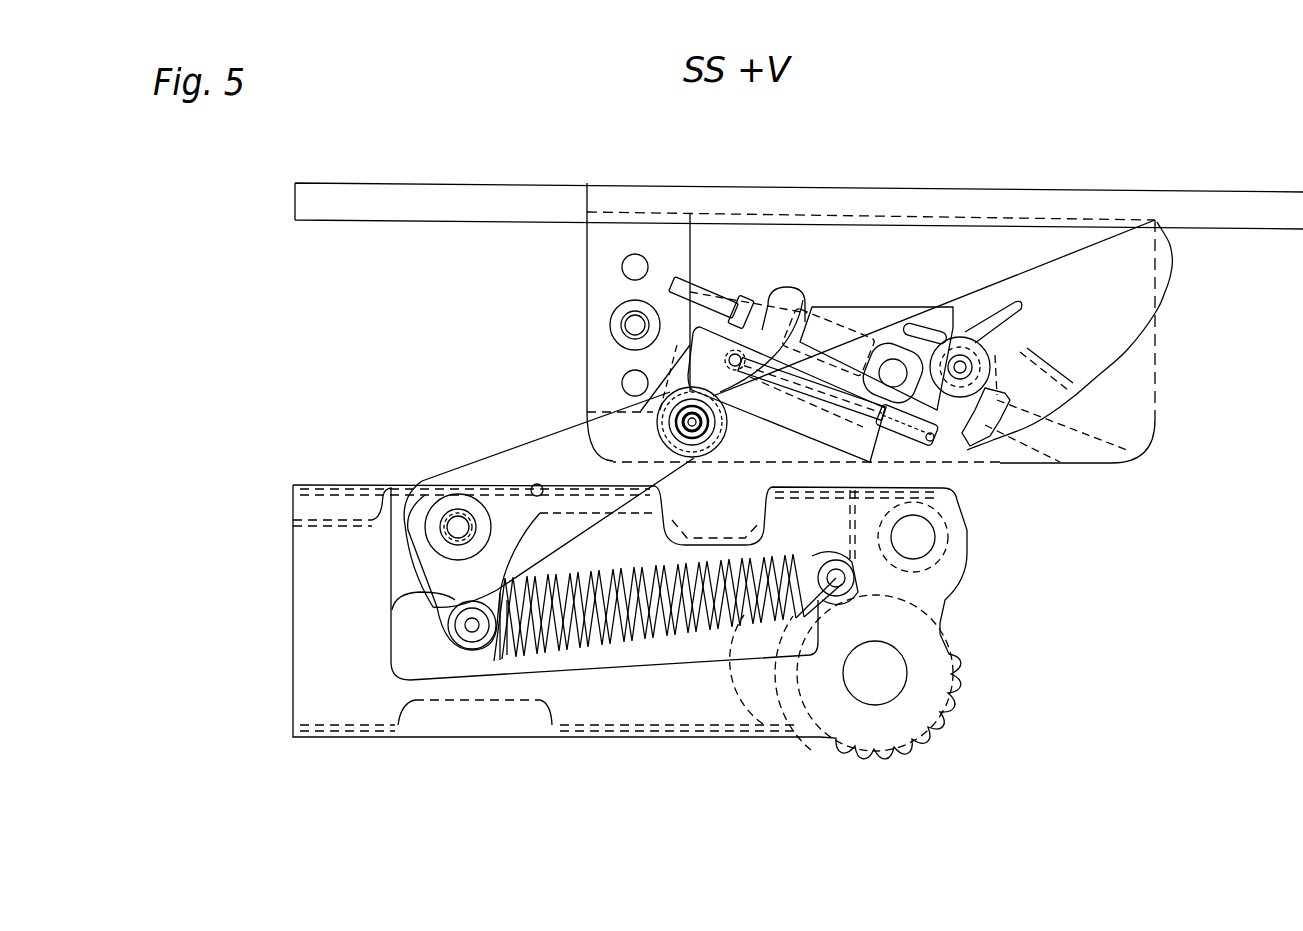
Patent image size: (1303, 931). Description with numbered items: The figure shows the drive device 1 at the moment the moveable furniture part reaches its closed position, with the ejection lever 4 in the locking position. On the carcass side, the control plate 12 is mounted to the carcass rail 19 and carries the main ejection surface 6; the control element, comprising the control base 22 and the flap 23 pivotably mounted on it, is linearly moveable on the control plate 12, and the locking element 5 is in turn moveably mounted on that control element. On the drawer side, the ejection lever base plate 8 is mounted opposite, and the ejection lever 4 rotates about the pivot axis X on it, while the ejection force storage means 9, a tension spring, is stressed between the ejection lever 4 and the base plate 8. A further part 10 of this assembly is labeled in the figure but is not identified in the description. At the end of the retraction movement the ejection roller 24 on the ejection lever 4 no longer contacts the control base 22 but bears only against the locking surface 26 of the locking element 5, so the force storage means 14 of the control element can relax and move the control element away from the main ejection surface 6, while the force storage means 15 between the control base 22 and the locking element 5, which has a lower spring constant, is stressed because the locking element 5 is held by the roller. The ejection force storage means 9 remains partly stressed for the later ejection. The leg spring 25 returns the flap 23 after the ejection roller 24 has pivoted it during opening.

The drive device 1 is at (1157, 177).
The ejection lever 4 is at (490, 470).
The locking element 5 is at (752, 343).
The main ejection surface 6 is at (687, 247).
The ejection lever base plate 8 is at (373, 705).
The ejection force storage means 9 is at (643, 625).
The pivot plate 10 is at (445, 578).
The control plate 12 is at (953, 268).
The force storage means 14 is at (772, 327).
The force storage means 15 is at (873, 420).
The carcass rail 19 is at (388, 203).
The control base 22 is at (879, 327).
The flap 23 is at (1097, 300).
The ejection roller 24 is at (678, 390).
The leg spring 25 is at (981, 333).
The locking surface 26 is at (703, 390).
The pivot axis X is at (445, 528).